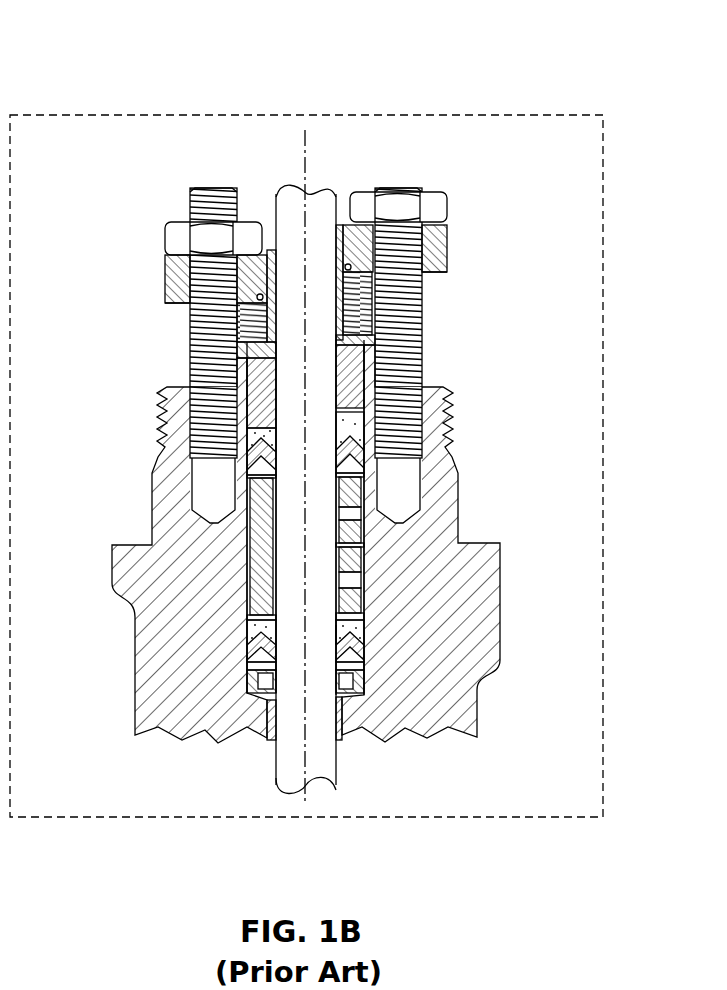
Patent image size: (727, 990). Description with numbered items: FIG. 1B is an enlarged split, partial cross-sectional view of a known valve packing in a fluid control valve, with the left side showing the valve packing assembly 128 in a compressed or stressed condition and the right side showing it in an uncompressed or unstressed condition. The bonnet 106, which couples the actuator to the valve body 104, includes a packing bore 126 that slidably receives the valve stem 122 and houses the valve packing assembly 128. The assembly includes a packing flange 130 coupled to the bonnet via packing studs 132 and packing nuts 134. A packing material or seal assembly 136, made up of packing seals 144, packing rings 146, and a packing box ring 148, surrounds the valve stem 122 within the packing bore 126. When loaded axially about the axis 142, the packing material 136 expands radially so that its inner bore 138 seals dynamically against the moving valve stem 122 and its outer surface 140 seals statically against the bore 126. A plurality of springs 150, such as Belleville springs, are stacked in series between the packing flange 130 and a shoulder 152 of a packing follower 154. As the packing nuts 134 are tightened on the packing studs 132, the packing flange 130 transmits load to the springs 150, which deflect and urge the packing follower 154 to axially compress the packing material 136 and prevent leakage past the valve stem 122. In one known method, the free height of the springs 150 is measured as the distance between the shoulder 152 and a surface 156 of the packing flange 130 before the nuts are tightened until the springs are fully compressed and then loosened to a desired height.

The valve body 104 is at (135, 690).
The bonnet 106 is at (500, 588).
The valve stem 122 is at (338, 760).
The packing bore 126 is at (258, 570).
The valve packing assembly 128 is at (168, 52).
The packing flange 130 is at (168, 281).
The packing studs 132 is at (211, 190).
The packing nuts 134 is at (166, 240).
The packing material 136 is at (382, 548).
The inner bore 138 is at (460, 545).
The outer surface 140 is at (333, 641).
The axis 142 is at (308, 132).
The packing seals 144 is at (250, 647).
The packing rings 146 is at (257, 602).
The packing box ring 148 is at (248, 677).
The springs 150 is at (265, 318).
The shoulder 152 is at (238, 352).
The packing follower 154 is at (250, 410).
The surface 156 is at (172, 303).